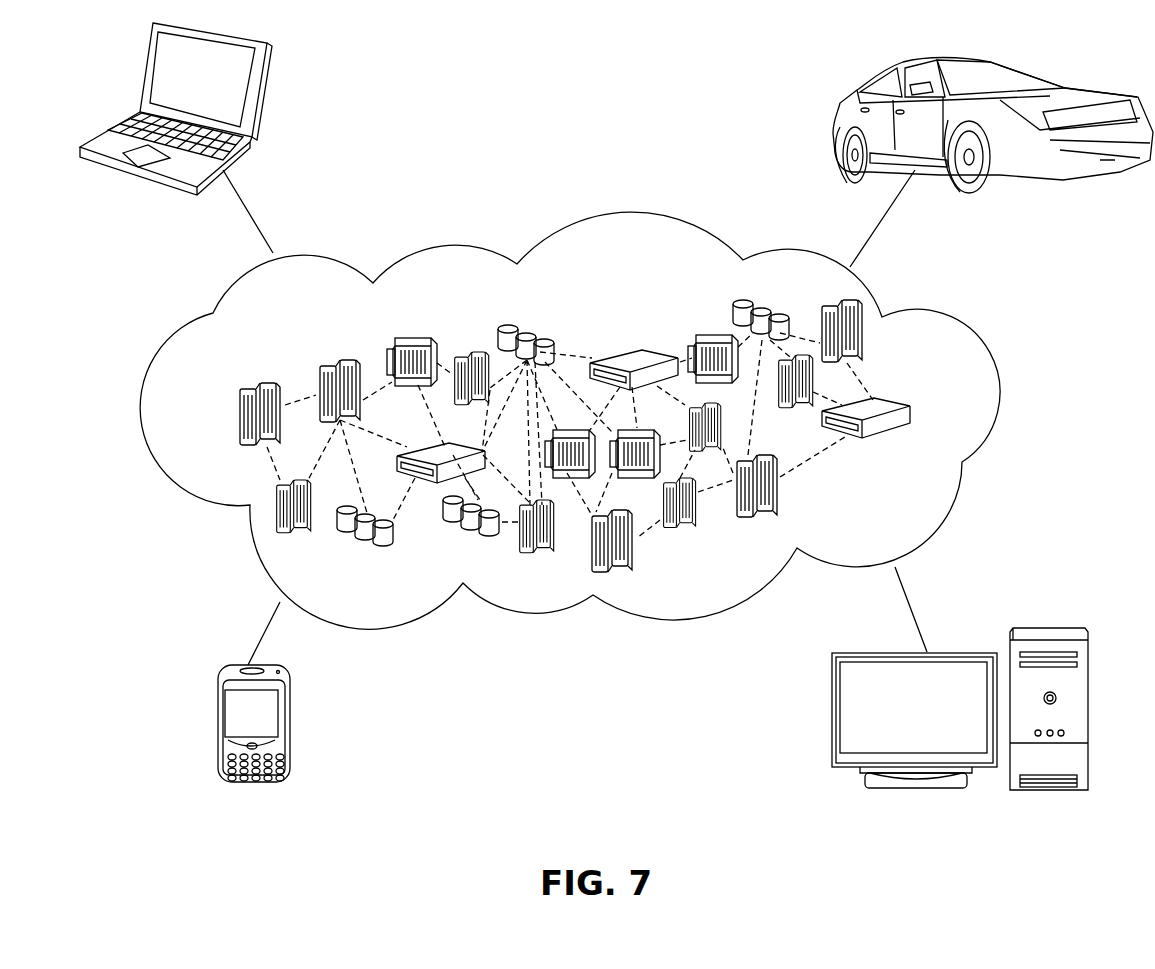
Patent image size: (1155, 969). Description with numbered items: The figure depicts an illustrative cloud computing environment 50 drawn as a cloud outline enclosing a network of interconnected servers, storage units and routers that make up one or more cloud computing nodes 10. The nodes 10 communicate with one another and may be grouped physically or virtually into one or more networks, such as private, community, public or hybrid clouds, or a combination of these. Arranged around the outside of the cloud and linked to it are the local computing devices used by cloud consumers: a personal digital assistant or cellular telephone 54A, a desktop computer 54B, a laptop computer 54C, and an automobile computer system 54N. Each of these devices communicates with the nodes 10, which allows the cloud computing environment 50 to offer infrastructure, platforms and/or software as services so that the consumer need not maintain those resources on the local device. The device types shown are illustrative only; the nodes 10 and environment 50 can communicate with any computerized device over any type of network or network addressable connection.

The cloud computing node 10 is at (952, 414).
The cloud computing environment 50 is at (972, 330).
The cellular telephone 54A is at (218, 728).
The desktop computer 54B is at (1050, 623).
The laptop computer 54C is at (260, 97).
The automobile computer system 54N is at (843, 102).